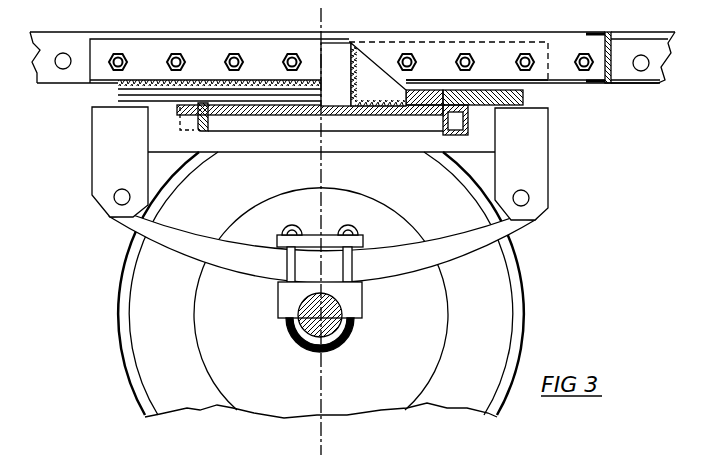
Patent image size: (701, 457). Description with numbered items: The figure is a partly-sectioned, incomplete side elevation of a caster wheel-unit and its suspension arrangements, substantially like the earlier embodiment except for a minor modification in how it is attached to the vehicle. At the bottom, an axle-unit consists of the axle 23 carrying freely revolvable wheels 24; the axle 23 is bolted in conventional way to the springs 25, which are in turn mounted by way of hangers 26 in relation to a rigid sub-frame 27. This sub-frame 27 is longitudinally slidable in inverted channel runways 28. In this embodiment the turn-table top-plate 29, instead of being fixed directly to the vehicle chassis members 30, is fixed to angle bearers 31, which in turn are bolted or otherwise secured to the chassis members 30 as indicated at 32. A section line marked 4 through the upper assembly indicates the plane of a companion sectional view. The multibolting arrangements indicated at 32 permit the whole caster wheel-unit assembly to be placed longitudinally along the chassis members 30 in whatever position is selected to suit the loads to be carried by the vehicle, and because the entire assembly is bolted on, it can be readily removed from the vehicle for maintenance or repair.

The section line 4- 4 is at (367, 19).
The axle 23 is at (347, 328).
The wheels 24 is at (505, 257).
The springs 25 is at (135, 247).
The hangers 26 is at (105, 178).
The sub-frame 27 is at (298, 145).
The inverted channel runways 28 is at (257, 125).
The turn-table top-plate 29 is at (117, 90).
The chassis members 30 is at (77, 42).
The angle bearers 31 is at (100, 75).
The multibolting arrangements 32 is at (172, 68).